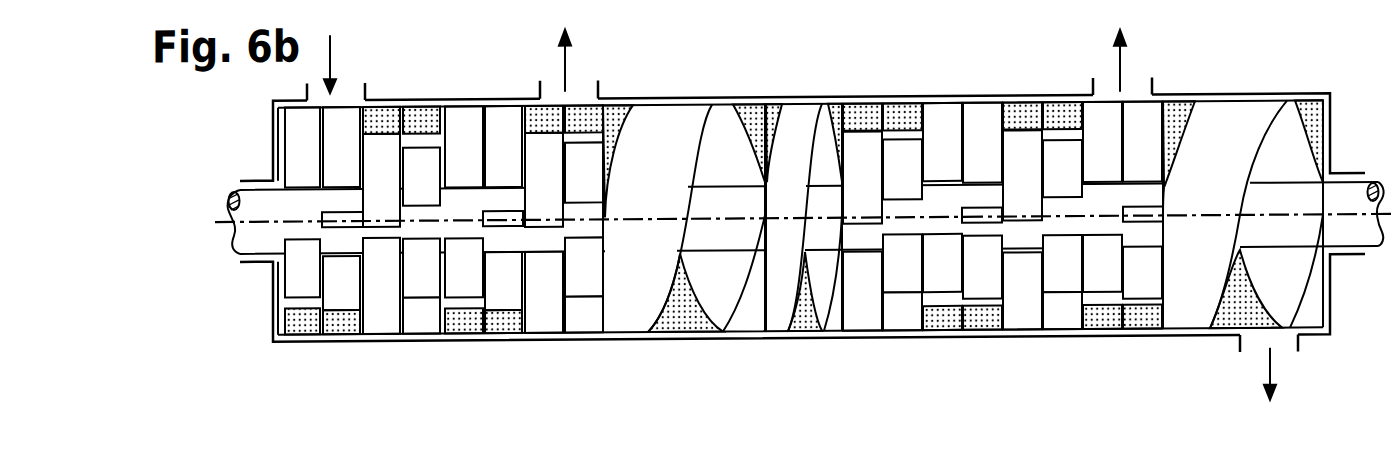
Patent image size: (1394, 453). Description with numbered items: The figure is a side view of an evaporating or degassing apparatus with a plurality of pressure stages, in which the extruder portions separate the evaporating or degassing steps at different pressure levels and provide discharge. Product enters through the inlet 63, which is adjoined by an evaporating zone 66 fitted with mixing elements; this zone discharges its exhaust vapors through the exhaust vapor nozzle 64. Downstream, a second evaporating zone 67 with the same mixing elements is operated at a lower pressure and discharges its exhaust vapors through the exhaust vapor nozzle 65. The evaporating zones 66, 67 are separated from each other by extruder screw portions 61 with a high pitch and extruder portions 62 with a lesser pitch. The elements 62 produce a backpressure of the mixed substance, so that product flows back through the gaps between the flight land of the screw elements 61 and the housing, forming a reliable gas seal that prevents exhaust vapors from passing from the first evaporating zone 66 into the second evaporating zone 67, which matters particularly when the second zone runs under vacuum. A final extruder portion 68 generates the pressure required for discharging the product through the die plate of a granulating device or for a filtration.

The extruder screw portion with high pitch 61 is at (673, 129).
The extruder portion with lesser pitch 62 is at (796, 130).
The inlet 63 is at (343, 87).
The exhaust vapor nozzle 64 is at (578, 87).
The exhaust vapor nozzle 65 is at (1134, 90).
The evaporating zone 66 is at (462, 128).
The second evaporating zone 67 is at (980, 131).
The final extruder portion 68 is at (1227, 120).